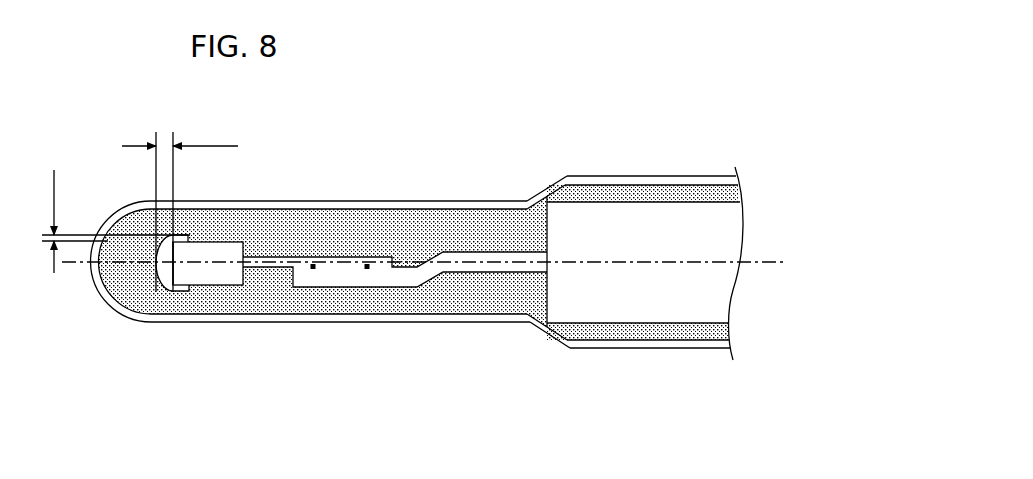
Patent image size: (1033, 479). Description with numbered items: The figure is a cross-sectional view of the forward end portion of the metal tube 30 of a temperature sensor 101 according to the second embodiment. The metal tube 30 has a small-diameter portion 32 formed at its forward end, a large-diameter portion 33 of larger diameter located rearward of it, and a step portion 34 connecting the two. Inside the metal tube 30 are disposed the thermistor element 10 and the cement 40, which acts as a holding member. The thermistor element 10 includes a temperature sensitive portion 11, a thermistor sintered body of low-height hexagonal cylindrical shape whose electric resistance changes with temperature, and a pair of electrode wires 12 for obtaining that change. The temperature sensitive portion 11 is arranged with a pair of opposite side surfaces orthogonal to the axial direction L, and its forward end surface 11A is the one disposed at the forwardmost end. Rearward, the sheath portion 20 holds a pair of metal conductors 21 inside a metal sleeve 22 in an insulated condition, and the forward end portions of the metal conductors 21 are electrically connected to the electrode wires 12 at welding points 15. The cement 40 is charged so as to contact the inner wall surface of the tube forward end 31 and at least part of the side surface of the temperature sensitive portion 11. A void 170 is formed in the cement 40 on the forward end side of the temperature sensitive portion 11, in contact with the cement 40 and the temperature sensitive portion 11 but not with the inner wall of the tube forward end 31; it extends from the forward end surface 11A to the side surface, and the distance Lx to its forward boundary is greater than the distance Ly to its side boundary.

The temperature sensor 101 is at (111, 125).
The thermistor element 10 is at (290, 370).
The temperature sensitive portion 11 is at (205, 285).
The forward end surface 11A is at (172, 266).
The electrode wires 12 is at (265, 268).
The welding points 15 is at (367, 268).
The void 170 is at (178, 292).
The sheath portion 20 is at (630, 388).
The metal conductors 21 is at (508, 280).
The sleeve 22 is at (605, 325).
The metal tube 30 is at (592, 129).
The tube forward end 31 is at (98, 297).
The small-diameter portion 32 is at (485, 200).
The large-diameter portion 33 is at (642, 175).
The step portion 34 is at (543, 188).
The cement 40 is at (402, 218).
The axial direction L is at (757, 263).
The distance Lx is at (180, 206).
The distance Ly is at (116, 221).